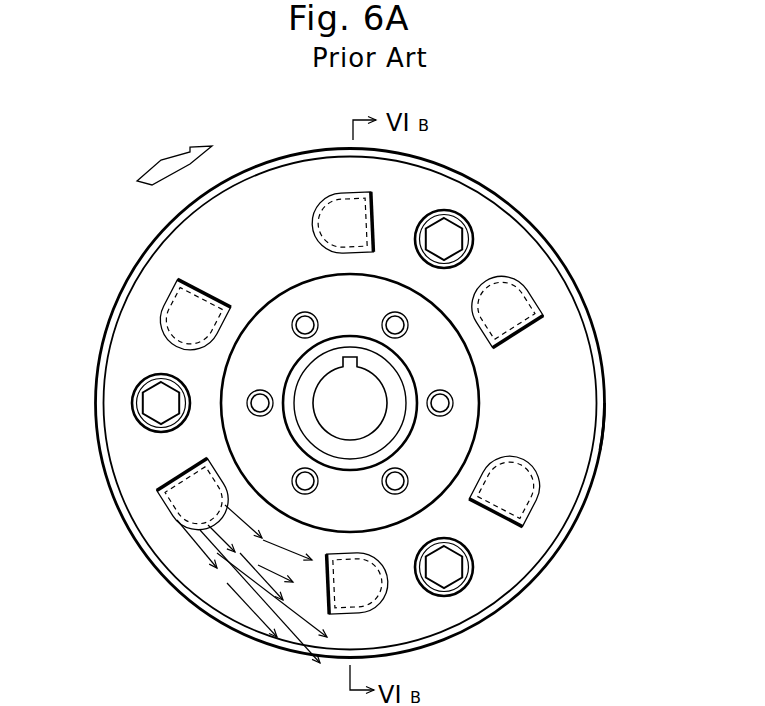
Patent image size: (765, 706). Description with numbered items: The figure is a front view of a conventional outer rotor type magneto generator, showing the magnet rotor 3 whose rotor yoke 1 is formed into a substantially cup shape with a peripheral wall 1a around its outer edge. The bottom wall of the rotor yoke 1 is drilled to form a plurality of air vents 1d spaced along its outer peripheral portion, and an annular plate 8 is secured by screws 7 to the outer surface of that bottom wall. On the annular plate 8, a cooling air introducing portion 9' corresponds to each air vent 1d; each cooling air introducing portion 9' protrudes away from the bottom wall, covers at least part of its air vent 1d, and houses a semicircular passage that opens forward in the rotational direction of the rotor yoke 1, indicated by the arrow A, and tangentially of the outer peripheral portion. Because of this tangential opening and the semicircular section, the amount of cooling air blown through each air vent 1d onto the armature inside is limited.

The rotor yoke 1 is at (494, 191).
The peripheral wall 1a is at (606, 432).
The air vent 1d is at (342, 201).
The magnet rotor 3 is at (556, 210).
The screw 7 is at (458, 214).
The annular plate 8 is at (548, 390).
The cooling air introducing portion 9' is at (364, 392).
The direction of rotation A is at (178, 162).